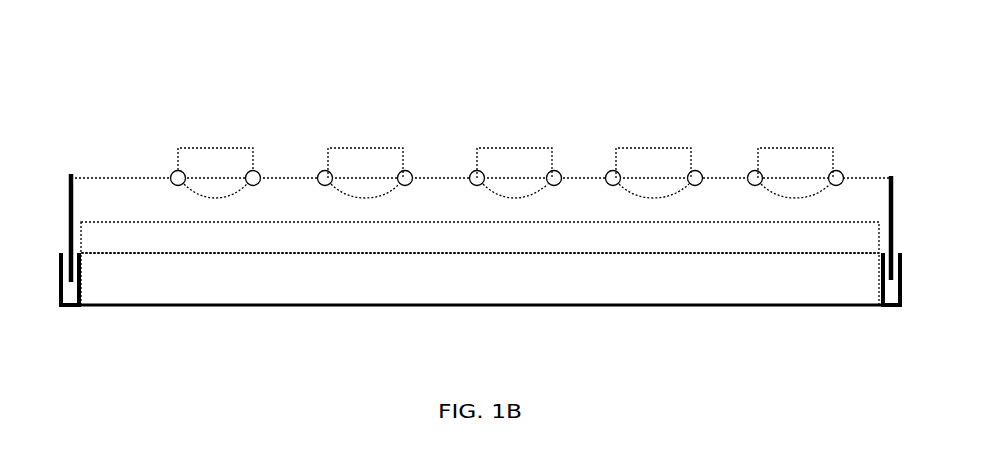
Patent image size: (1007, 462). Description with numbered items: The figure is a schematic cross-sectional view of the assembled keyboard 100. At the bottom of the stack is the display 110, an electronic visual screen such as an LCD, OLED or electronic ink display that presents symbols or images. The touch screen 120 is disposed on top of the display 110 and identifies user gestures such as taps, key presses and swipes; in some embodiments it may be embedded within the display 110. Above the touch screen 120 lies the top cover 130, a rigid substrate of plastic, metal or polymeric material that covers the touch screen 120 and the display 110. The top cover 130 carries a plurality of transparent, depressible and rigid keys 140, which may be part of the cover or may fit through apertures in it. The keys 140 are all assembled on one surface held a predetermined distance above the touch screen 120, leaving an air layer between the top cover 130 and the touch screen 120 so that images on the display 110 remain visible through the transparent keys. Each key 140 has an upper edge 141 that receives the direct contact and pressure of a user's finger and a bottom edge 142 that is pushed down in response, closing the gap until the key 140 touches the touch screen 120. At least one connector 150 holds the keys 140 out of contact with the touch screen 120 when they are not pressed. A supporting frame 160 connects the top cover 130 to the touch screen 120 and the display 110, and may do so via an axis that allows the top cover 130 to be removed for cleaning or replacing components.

The keyboard 100 is at (867, 95).
The display 110 is at (555, 292).
The touch screen 120 is at (98, 243).
The top cover 130 is at (428, 175).
The key 140 is at (260, 172).
The upper edge 141 is at (222, 147).
The bottom edge 142 is at (223, 198).
The connector 150 is at (700, 176).
The supporting frame 160 is at (902, 273).